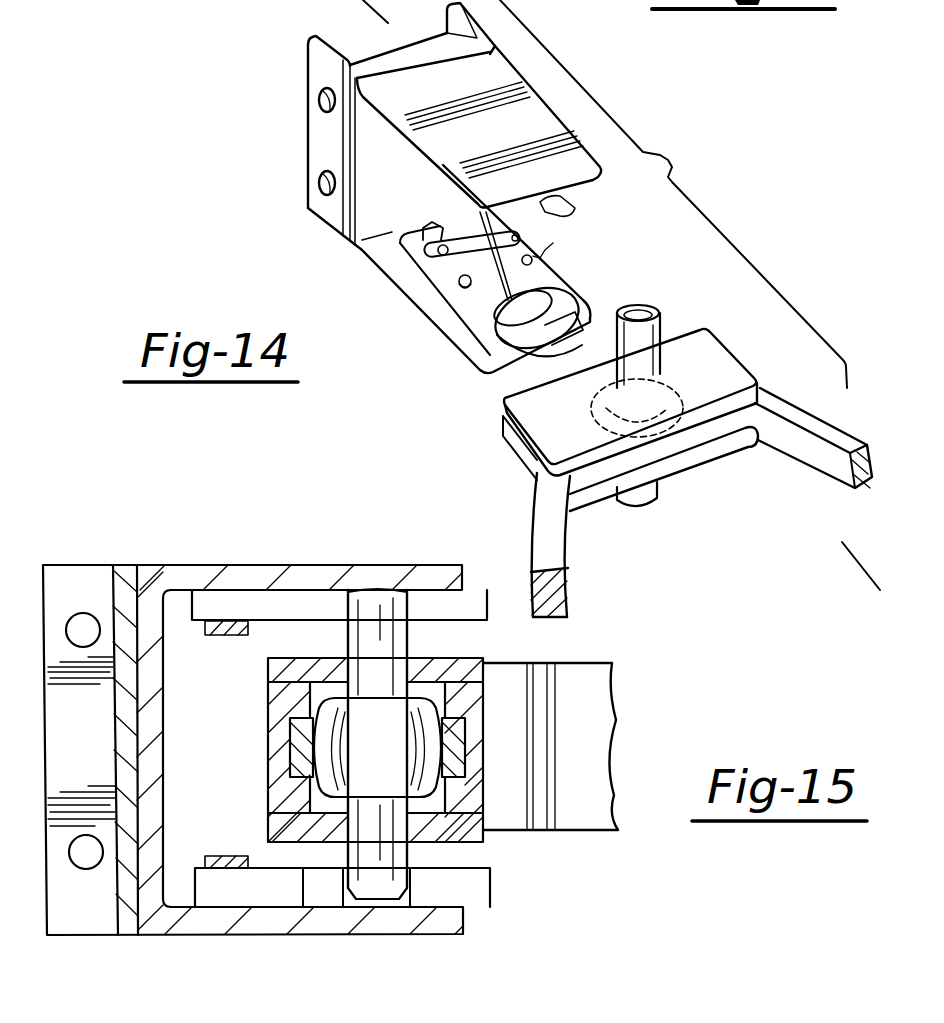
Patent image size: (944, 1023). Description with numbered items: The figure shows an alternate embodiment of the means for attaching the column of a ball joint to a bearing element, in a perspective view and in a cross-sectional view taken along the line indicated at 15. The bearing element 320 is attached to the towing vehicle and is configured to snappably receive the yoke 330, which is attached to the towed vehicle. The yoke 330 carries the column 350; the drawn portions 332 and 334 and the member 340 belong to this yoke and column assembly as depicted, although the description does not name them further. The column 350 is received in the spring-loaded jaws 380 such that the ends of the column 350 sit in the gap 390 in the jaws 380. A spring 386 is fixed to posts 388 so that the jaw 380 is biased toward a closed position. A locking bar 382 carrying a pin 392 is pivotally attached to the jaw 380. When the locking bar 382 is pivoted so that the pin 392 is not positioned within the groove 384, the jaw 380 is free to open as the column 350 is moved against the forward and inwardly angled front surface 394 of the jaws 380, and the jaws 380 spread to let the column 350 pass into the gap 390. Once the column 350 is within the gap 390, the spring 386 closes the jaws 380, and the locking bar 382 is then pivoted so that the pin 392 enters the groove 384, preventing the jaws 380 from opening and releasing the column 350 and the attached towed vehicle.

In FIG. 14, the section line indicator for FIG. 15 is at (346, 2).
In FIG. 15, the bearing element 320 is at (268, 563).
In FIG. 14, the yoke 330 is at (540, 413).
In FIG. 14, the plate portion 332 is at (590, 445).
In FIG. 14, the crossbar 334 is at (693, 462).
In FIG. 14, the yoke arm 340 is at (835, 475).
In FIG. 15, the yoke arm 340 is at (580, 742).
In FIG. 14, the column 350 is at (640, 362).
In FIG. 15, the column 350 is at (397, 644).
In FIG. 14, the spring-loaded jaws 380 is at (597, 302).
In FIG. 15, the spring-loaded jaws 380 is at (468, 590).
In FIG. 14, the locking bar 382 is at (403, 290).
In FIG. 14, the groove 384 is at (427, 232).
In FIG. 14, the spring 386 is at (447, 312).
In FIG. 14, the posts 388 is at (553, 243).
In FIG. 14, the gap 390 is at (572, 285).
In FIG. 15, the gap 390 is at (340, 893).
In FIG. 14, the pin 392 is at (366, 257).
In FIG. 14, the front surface 394 is at (520, 368).